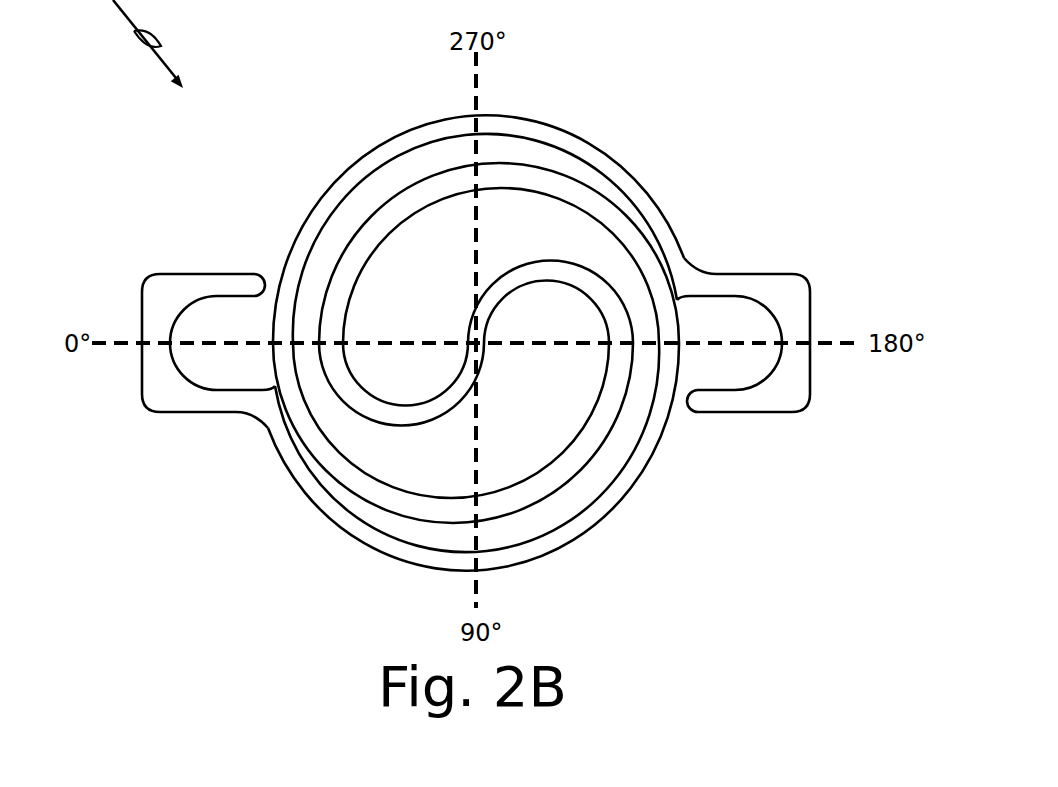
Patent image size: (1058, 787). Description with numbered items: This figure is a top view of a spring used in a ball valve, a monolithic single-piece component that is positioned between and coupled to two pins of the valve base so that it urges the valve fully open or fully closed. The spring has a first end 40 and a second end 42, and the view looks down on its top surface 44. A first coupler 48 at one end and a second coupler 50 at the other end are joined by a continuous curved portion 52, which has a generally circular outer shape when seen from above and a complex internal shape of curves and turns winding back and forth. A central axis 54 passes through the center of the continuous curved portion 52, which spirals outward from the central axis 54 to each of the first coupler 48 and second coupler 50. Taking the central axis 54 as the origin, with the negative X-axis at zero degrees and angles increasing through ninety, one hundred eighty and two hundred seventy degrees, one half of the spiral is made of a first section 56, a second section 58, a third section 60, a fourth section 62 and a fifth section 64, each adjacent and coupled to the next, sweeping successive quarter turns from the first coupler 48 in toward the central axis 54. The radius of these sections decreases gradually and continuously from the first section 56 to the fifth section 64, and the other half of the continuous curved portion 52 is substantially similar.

The first end 40 is at (144, 269).
The second end 42 is at (788, 254).
The top surface 44 is at (315, 216).
The first coupler 48 is at (178, 319).
The second coupler 50 is at (777, 318).
The continuous curved portion 52 is at (590, 113).
The central axis 54 is at (482, 346).
The first section 56 is at (330, 516).
The second section 58 is at (606, 497).
The third section 60 is at (610, 209).
The fourth section 62 is at (402, 207).
The fifth section 64 is at (350, 397).